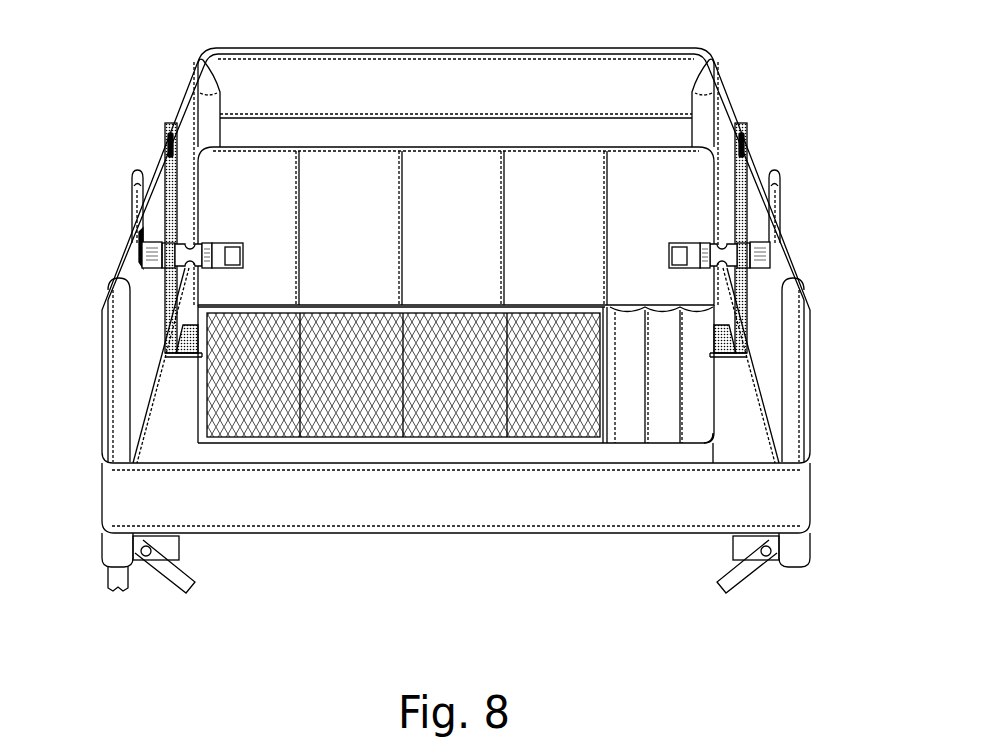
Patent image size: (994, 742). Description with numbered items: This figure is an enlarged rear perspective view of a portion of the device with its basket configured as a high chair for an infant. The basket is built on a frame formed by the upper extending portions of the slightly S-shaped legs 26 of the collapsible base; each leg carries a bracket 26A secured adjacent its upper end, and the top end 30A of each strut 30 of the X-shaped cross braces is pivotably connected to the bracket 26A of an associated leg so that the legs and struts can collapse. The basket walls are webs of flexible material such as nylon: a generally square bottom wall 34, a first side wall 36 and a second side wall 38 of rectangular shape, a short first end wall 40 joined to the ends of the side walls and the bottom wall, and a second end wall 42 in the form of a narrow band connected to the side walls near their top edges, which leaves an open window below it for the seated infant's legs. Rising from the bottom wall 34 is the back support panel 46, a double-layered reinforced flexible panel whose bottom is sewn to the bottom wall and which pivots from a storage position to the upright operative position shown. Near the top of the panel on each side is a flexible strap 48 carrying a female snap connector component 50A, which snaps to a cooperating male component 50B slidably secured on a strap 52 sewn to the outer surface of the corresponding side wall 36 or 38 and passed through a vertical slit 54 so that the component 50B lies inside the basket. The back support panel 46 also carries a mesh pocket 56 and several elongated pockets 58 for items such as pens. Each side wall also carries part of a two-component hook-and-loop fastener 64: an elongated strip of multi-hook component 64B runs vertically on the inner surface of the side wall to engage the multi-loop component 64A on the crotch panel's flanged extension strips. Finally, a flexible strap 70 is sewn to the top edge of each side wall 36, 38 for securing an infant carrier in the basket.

The leg 26 is at (109, 582).
The bracket 26A is at (114, 548).
The strut 30 is at (186, 590).
The top end of strut 30A is at (178, 572).
The bottom wall 34 is at (730, 443).
The first side wall 36 is at (141, 236).
The second side wall 38 is at (785, 243).
The first end wall 40 is at (519, 495).
The second end wall 42 is at (636, 87).
The back support panel 46 is at (465, 190).
The flexible strap 48 is at (178, 335).
The snap connector component 50A is at (182, 262).
The cooperating snap connector component 50B is at (190, 270).
The flexible strap 52 is at (160, 243).
The slit or slot 54 is at (142, 257).
The mesh pocket 56 is at (444, 412).
The elongated pocket 58 is at (693, 430).
The upright post 64 is at (168, 128).
The multi-loop component 64A is at (190, 352).
The multi-hook component 64B is at (177, 160).
The flexible strap 70 is at (135, 176).